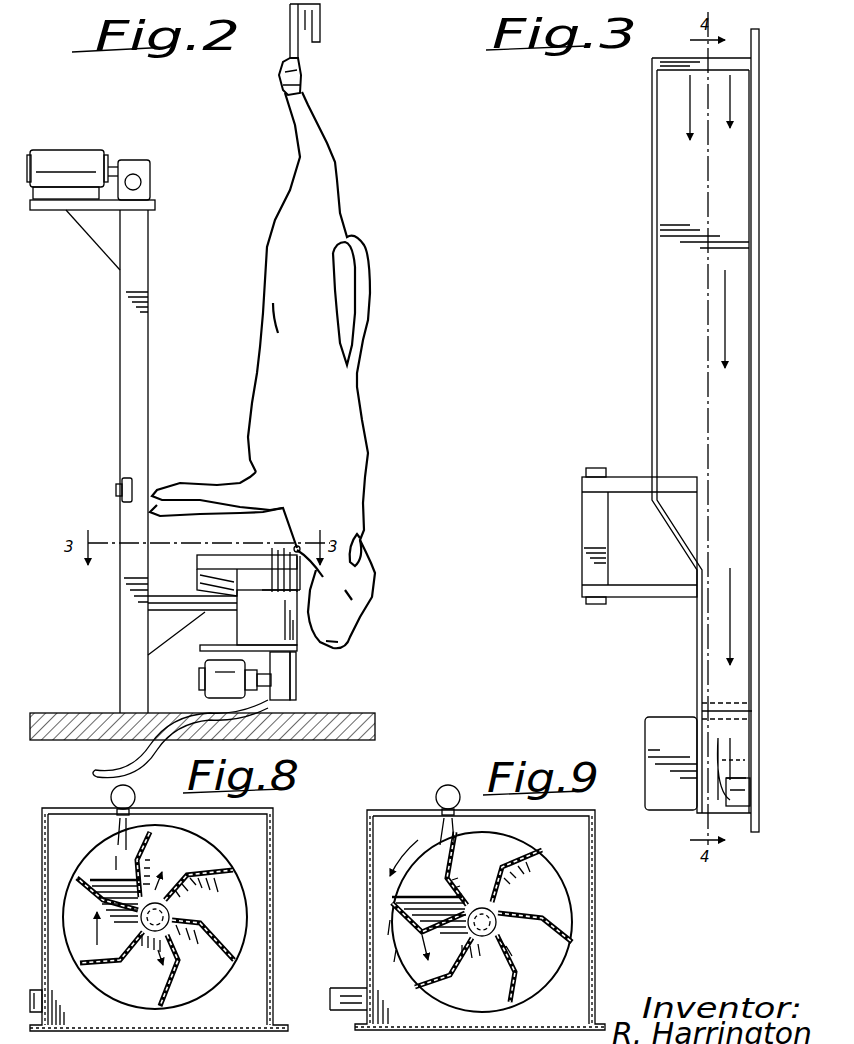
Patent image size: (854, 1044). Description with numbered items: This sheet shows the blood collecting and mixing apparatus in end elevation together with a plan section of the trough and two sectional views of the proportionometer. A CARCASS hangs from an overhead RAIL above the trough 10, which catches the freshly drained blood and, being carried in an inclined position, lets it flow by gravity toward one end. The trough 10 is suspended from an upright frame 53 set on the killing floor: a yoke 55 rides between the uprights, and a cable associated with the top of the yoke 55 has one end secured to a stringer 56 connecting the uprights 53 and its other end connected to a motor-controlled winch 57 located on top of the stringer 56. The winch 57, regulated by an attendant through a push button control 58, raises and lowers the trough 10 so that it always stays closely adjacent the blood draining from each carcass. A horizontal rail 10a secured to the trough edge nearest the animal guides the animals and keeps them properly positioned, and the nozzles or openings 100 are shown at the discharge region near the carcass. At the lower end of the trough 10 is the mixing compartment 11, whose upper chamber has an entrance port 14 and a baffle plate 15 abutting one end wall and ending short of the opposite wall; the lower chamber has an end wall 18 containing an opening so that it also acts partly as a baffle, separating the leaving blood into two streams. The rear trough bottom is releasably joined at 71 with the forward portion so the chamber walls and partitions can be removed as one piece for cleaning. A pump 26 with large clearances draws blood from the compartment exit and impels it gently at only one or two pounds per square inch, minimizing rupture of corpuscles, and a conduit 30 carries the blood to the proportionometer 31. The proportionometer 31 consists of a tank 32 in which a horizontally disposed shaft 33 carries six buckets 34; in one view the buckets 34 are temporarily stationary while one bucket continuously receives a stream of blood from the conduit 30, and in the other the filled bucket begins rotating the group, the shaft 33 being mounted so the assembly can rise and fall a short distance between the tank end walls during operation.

In FIG. 2, the rail RAIL is at (303, 48).
In FIG. 2, the carcass CARCASS is at (338, 368).
In FIG. 2, the motor-controlled winch 57 is at (136, 160).
In FIG. 2, the stringer 56 is at (156, 205).
In FIG. 2, the upright frame 53 is at (120, 388).
In FIG. 3, the upright frame 53 is at (592, 466).
In FIG. 2, the push button control 58 is at (116, 490).
In FIG. 2, the trough 10 is at (197, 562).
In FIG. 3, the trough 10 is at (678, 340).
In FIG. 2, the nozzles 100 is at (262, 582).
In FIG. 2, the horizontal rail 10a is at (300, 556).
In FIG. 2, the mixing compartment 11 is at (250, 624).
In FIG. 3, the mixing compartment 11 is at (747, 757).
In FIG. 2, the pump 26 is at (298, 680).
In FIG. 2, the conduit 30 is at (222, 704).
In FIG. 8, the conduit 30 is at (136, 797).
In FIG. 9, the conduit 30 is at (436, 797).
In FIG. 3, the yoke 55 is at (582, 538).
In FIG. 3, the releasable joint 71 is at (708, 718).
In FIG. 3, the end wall 18 is at (755, 710).
In FIG. 3, the baffle plate 15 is at (750, 760).
In FIG. 3, the entrance port 14 is at (748, 780).
In FIG. 8, the proportionometer 31 is at (274, 830).
In FIG. 9, the proportionometer 31 is at (597, 876).
In FIG. 8, the tank 32 is at (274, 868).
In FIG. 9, the tank 32 is at (597, 914).
In FIG. 8, the shaft 33 is at (168, 930).
In FIG. 9, the shaft 33 is at (484, 936).
In FIG. 8, the buckets 34 is at (228, 878).
In FIG. 9, the buckets 34 is at (545, 880).